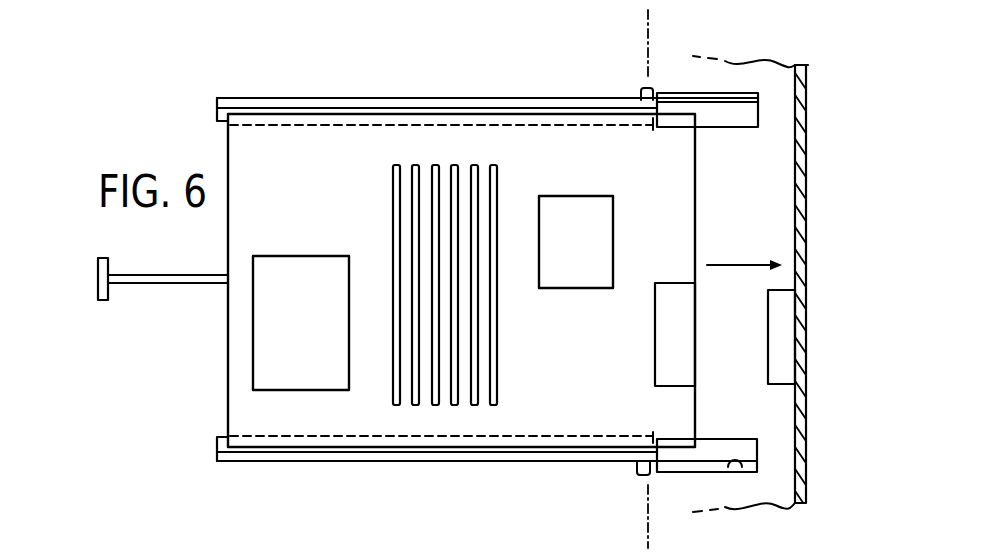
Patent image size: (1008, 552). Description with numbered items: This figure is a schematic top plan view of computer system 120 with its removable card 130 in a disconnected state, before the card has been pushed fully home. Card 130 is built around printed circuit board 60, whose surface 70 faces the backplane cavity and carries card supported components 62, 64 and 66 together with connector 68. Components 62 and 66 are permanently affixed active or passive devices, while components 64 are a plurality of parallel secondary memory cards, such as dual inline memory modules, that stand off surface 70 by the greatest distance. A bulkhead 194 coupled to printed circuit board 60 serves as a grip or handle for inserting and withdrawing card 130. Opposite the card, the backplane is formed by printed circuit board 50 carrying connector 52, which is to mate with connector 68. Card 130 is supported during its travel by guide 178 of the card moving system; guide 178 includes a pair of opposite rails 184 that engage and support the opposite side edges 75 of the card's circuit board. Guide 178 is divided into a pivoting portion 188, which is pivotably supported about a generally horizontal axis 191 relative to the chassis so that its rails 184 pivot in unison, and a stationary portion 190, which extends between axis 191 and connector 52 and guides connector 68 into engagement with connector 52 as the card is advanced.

The printed circuit board 50 is at (806, 222).
The connector 52 is at (768, 338).
The printed circuit board 60 is at (227, 150).
The component 62 is at (300, 256).
The components 64 is at (497, 378).
The component 66 is at (575, 196).
The connector 68 is at (655, 332).
The surface 70 is at (570, 351).
The side edges 75 is at (256, 117).
The computer system 120 is at (188, 46).
The removable card 130 is at (226, 403).
The guide 178 is at (477, 96).
The rails 184 is at (420, 97).
The pivoting portion 188 is at (345, 97).
The stationary portion 190 is at (723, 96).
The axis 191 is at (658, 48).
The bulkhead 194 is at (97, 280).